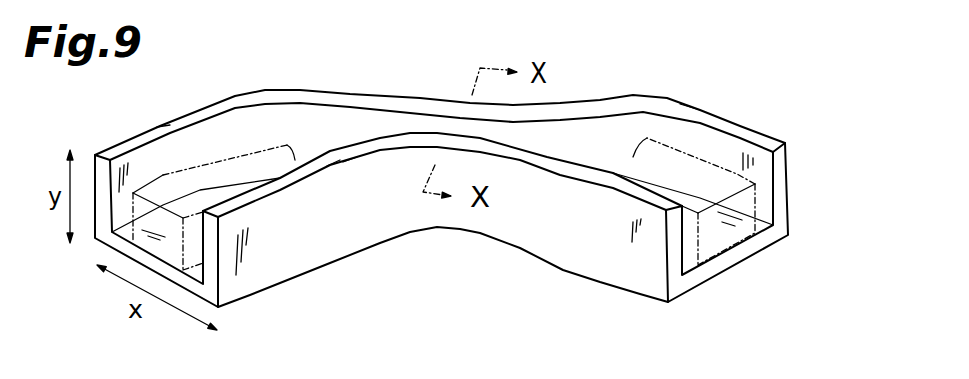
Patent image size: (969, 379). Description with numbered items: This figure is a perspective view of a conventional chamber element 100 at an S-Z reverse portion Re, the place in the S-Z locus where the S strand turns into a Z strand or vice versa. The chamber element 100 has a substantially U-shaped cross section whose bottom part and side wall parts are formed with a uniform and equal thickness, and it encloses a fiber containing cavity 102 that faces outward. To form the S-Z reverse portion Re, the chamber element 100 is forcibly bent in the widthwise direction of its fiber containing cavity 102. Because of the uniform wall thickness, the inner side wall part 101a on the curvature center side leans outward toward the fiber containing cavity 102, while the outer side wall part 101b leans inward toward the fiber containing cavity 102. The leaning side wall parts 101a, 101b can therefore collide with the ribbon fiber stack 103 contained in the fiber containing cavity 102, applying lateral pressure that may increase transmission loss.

The chamber element 100 is at (637, 96).
The inner side wall part 101a is at (673, 242).
The outer side wall part 101b is at (790, 160).
The fiber containing cavity 102 is at (393, 127).
The ribbon fiber stack 103 is at (727, 228).
The S-Z reverse portion Re is at (447, 264).